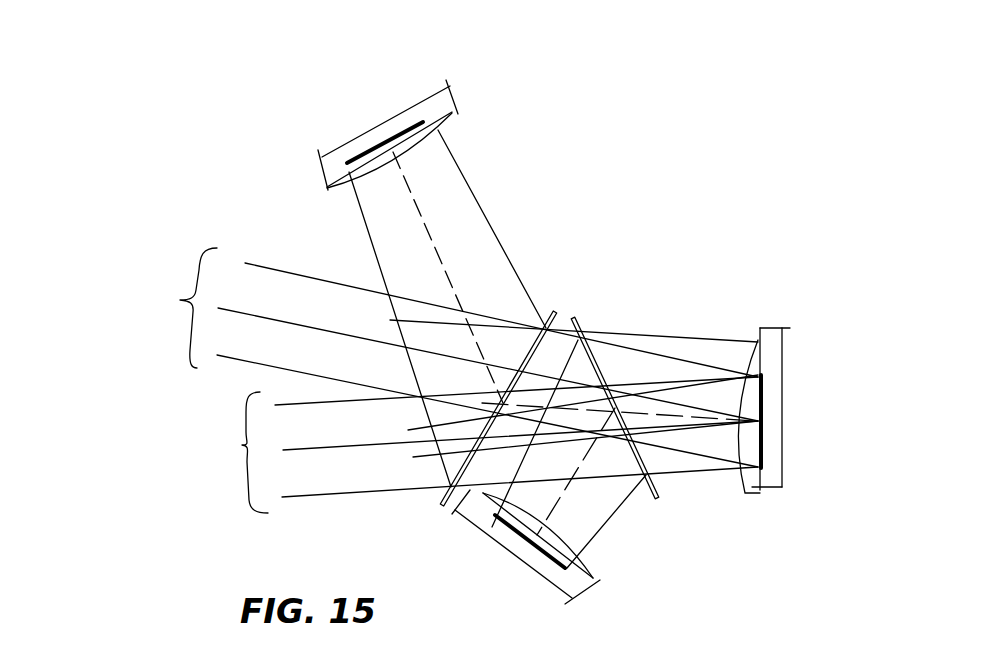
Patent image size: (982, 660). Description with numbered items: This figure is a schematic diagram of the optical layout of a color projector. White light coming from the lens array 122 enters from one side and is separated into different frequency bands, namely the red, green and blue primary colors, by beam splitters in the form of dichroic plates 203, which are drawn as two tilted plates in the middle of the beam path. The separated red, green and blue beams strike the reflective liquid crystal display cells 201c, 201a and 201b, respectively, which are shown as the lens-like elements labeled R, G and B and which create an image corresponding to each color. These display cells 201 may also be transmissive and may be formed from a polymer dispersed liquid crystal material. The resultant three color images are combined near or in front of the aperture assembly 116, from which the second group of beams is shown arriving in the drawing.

The aperture assembly 116 is at (404, 356).
The lens array 122 is at (453, 445).
The reflective liquid crystal display cells 201 is at (353, 148).
The green display cell 201a is at (764, 407).
The blue display cell 201b is at (407, 112).
The red display cell 201c is at (507, 546).
The dichroic plates 203 is at (559, 314).